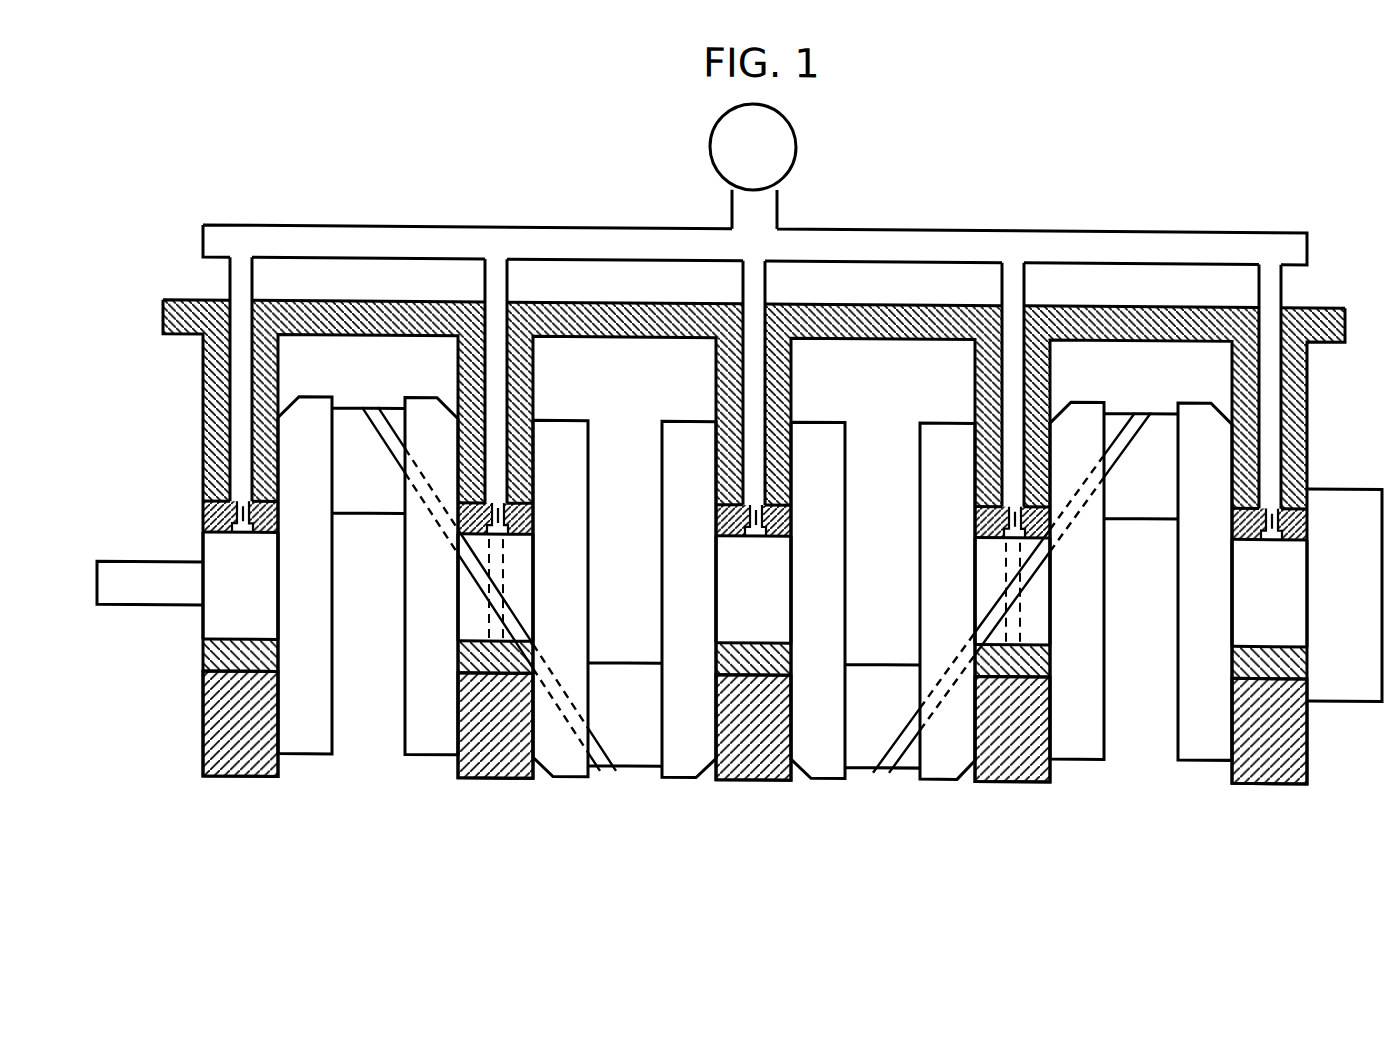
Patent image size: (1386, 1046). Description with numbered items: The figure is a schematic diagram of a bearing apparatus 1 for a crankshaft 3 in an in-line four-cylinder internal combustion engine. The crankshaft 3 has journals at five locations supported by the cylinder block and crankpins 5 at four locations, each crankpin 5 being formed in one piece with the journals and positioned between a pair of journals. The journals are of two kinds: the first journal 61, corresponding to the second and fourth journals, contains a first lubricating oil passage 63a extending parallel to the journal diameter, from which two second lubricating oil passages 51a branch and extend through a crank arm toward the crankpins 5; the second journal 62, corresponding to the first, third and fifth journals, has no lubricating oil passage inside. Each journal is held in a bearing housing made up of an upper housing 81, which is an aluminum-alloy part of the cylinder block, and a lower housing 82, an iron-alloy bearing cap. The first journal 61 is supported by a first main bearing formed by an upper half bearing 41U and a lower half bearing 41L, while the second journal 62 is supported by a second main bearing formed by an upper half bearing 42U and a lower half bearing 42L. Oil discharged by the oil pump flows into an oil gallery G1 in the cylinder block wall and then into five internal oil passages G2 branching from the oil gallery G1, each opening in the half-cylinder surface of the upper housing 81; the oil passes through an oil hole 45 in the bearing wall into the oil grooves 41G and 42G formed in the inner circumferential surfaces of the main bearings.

The bearing apparatus 1 is at (739, 488).
The crankshaft 3 is at (128, 546).
The crankpin 5 is at (393, 415).
The upper half bearing 41U is at (538, 526).
The oil groove 41G is at (502, 539).
The lower half bearing 41L is at (518, 656).
The upper half bearing 42U is at (270, 536).
The oil groove 42G is at (241, 537).
The lower half bearing 42L is at (246, 655).
The oil hole 45 is at (247, 513).
The second lubricating oil passage 51a is at (569, 682).
The first journal 61 is at (470, 616).
The second journal 62 is at (232, 620).
The first lubricating oil passage 63a is at (499, 598).
The upper housing 81 is at (272, 358).
The lower housing 82 is at (242, 769).
The oil gallery G1 is at (1098, 234).
The internal oil passage G2 is at (232, 281).